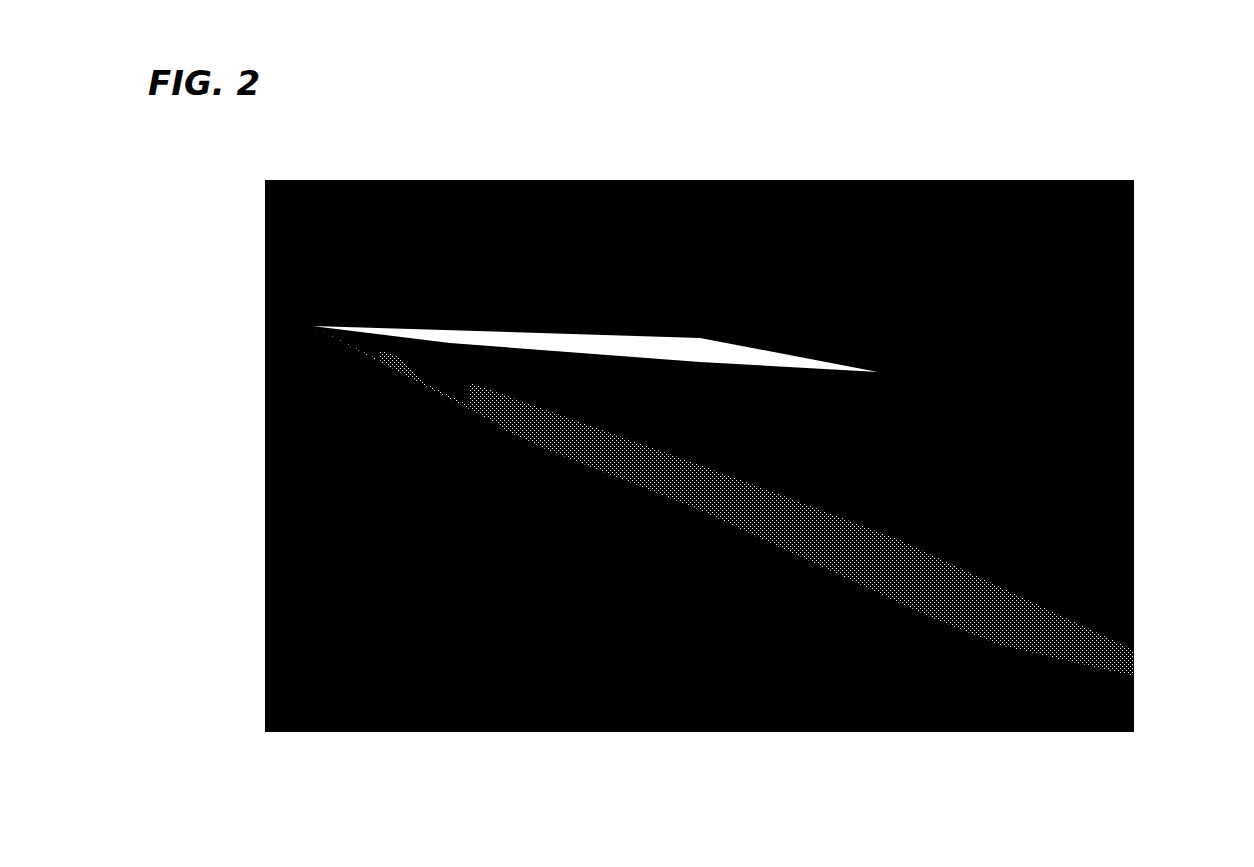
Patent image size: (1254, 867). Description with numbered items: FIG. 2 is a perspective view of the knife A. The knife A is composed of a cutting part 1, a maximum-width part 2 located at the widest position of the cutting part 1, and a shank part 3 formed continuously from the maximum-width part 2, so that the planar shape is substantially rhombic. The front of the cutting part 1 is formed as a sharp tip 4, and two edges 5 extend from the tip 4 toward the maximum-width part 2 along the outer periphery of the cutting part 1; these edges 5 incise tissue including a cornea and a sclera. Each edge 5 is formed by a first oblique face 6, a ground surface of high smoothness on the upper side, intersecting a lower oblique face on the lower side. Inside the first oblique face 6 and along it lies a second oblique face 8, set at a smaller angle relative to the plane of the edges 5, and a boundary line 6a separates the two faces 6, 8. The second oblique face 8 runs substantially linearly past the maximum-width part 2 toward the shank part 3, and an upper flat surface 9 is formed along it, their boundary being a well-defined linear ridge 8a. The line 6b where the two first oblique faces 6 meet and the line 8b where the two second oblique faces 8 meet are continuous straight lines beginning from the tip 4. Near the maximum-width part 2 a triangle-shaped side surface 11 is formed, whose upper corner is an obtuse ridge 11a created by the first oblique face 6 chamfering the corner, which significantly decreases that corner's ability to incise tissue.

The cutting part 1 is at (597, 285).
The knife A is at (967, 292).
The maximum-width part 2 is at (932, 610).
The shank part 3 is at (1042, 472).
The tip 4 is at (312, 327).
The edge 5 is at (542, 440).
The first oblique face 6 is at (622, 472).
The boundary line 6a is at (695, 497).
The line on which the two first oblique faces intersect 6b is at (350, 335).
The second oblique face 8 is at (767, 518).
The boundary line 8a is at (840, 525).
The line on which the two second oblique faces intersect 8b is at (433, 350).
The upper flat surface 9 is at (864, 458).
The side surface 11 is at (1082, 653).
The ridge 11a is at (1013, 628).